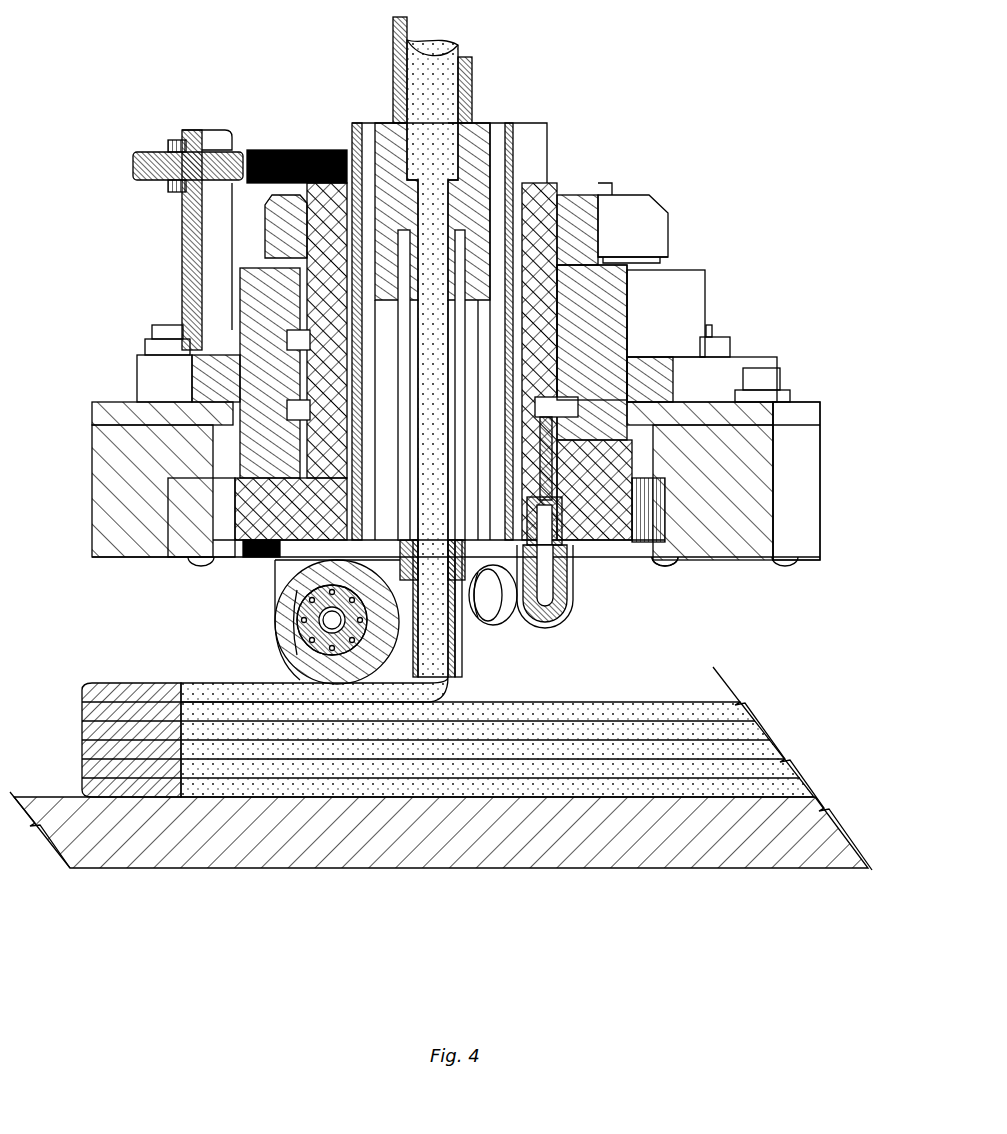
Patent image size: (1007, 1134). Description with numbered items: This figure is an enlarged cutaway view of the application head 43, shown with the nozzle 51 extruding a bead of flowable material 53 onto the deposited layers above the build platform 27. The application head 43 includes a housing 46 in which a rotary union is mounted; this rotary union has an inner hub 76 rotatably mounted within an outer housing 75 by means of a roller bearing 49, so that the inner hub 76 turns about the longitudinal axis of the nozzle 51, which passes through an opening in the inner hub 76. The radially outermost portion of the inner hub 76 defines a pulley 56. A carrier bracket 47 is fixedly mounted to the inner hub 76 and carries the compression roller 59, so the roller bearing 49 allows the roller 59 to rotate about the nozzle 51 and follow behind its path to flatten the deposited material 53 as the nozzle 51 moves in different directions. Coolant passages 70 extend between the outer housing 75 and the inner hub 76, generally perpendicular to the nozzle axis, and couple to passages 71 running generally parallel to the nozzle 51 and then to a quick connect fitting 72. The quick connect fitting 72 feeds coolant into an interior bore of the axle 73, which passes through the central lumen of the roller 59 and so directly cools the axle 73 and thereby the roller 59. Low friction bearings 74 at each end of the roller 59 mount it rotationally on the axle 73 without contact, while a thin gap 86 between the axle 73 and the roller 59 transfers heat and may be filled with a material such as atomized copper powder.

The build platform 27 is at (573, 868).
The application head 43 is at (752, 200).
The housing 46 is at (807, 500).
The carrier bracket 47 is at (300, 567).
The roller bearing 49 is at (638, 262).
The nozzle 51 is at (470, 660).
The material 53 is at (435, 38).
The pulley 56 is at (668, 540).
The roller 59 is at (300, 680).
The coolant passages 70 is at (248, 395).
The passages 71 is at (633, 400).
The quick connect fitting 72 is at (537, 624).
The axle 73 is at (292, 613).
The low friction bearing 74 is at (297, 668).
The outer housing 75 is at (256, 268).
The inner hub 76 is at (566, 185).
The gap 86 is at (300, 590).